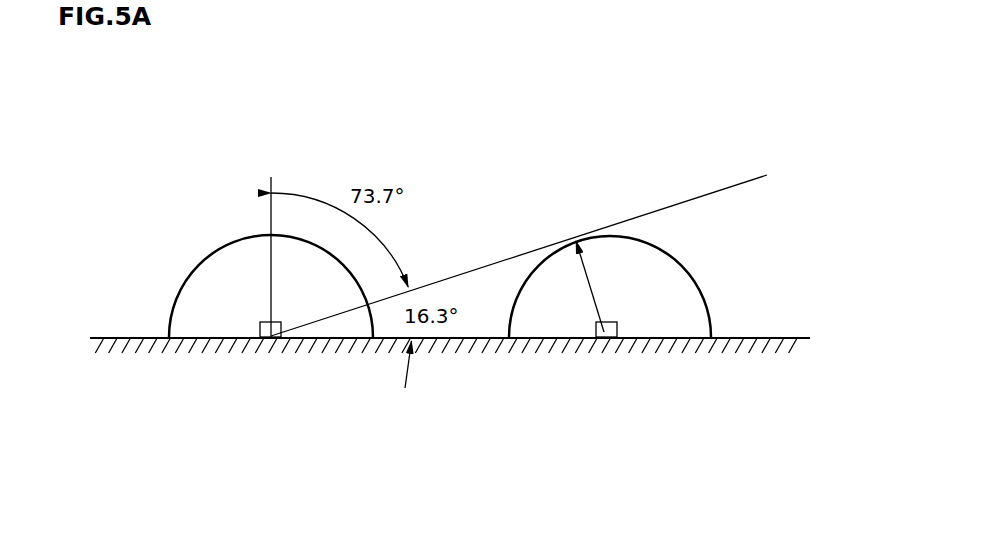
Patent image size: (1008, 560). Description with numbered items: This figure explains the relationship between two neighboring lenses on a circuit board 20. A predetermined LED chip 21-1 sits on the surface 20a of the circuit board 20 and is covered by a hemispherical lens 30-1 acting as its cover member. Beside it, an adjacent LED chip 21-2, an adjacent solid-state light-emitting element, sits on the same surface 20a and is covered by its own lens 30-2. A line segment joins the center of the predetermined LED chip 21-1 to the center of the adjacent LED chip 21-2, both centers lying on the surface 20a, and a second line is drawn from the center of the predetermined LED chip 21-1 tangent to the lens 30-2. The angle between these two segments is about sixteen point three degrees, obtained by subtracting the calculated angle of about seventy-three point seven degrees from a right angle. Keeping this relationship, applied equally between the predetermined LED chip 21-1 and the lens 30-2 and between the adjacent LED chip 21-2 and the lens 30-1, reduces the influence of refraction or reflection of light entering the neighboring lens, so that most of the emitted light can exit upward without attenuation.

The circuit board 20 is at (797, 352).
The surface of the circuit board 20a is at (778, 337).
The lens 30-1 is at (240, 238).
The predetermined LED chip 21-1 is at (260, 327).
The lens 30-2 is at (693, 278).
The adjacent LED chip 21-2 is at (618, 323).